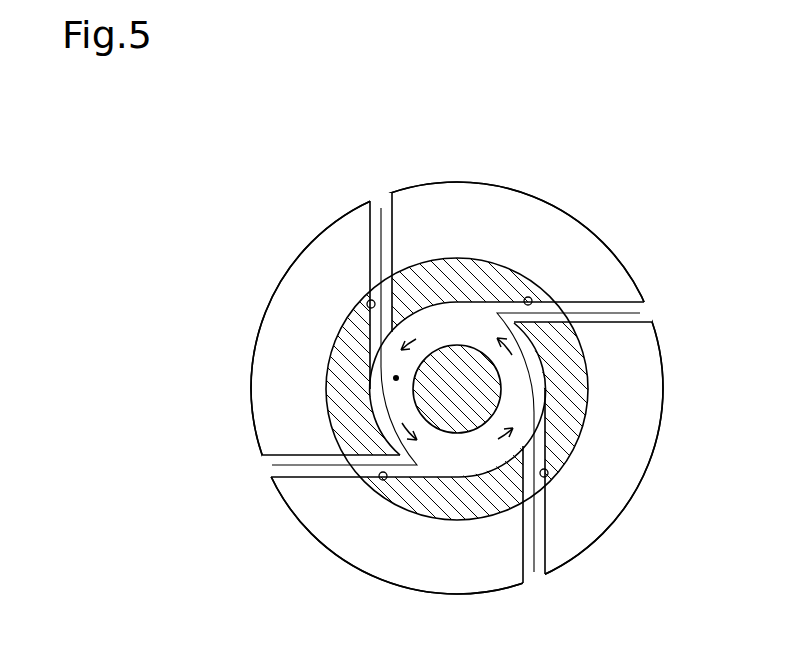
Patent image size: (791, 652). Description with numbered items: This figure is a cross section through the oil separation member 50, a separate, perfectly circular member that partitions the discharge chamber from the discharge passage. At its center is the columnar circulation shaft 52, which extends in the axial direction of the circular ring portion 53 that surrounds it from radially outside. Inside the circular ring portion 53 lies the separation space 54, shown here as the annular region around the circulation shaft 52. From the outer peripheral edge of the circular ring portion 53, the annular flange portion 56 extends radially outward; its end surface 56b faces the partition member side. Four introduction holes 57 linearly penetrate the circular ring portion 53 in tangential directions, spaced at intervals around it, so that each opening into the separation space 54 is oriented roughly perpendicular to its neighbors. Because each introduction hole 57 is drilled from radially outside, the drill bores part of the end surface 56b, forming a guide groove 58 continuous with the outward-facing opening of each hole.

The oil separation member 50 is at (284, 186).
The circulation shaft 52 is at (446, 414).
The circular ring portion 53 is at (481, 272).
The separation space 54 is at (393, 378).
The flange portion 56 is at (556, 241).
The end surface 56b is at (634, 447).
The introduction holes 57 is at (531, 299).
The guide groove 58 is at (388, 221).